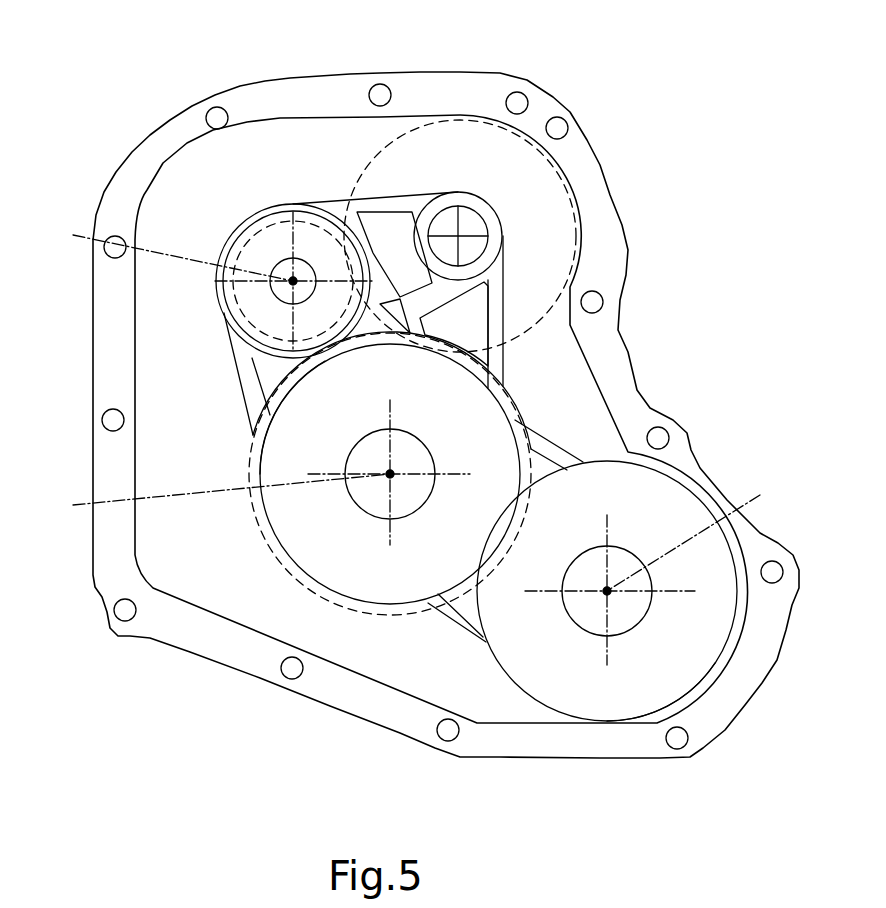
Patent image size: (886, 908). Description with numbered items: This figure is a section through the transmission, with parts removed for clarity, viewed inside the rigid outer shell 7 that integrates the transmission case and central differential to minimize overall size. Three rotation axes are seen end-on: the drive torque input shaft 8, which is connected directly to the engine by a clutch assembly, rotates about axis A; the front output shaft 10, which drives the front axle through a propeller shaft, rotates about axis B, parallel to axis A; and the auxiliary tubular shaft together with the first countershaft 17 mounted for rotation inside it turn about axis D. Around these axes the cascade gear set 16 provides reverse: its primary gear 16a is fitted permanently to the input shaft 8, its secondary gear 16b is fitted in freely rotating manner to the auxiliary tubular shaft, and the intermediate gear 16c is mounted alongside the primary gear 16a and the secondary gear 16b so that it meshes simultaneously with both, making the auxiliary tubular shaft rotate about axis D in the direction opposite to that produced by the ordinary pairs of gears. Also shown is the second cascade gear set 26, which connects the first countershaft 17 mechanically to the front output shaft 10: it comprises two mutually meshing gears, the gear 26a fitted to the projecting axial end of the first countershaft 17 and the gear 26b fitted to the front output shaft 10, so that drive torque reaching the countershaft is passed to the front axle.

The rigid outer shell 7 is at (616, 243).
The drive torque input shaft 8 is at (270, 290).
The front output shaft 10 is at (578, 620).
The cascade gear set 16 is at (323, 163).
The primary gear 16a is at (232, 240).
The secondary gear 16b is at (520, 400).
The intermediate gear 16c is at (557, 197).
The first countershaft 17 is at (365, 497).
The second cascade gear set 26 is at (384, 645).
The gear 26a is at (287, 532).
The gear 26b is at (622, 705).
The axis of rotation A is at (174, 253).
The axis of rotation B is at (690, 533).
The axis of rotation D is at (222, 496).